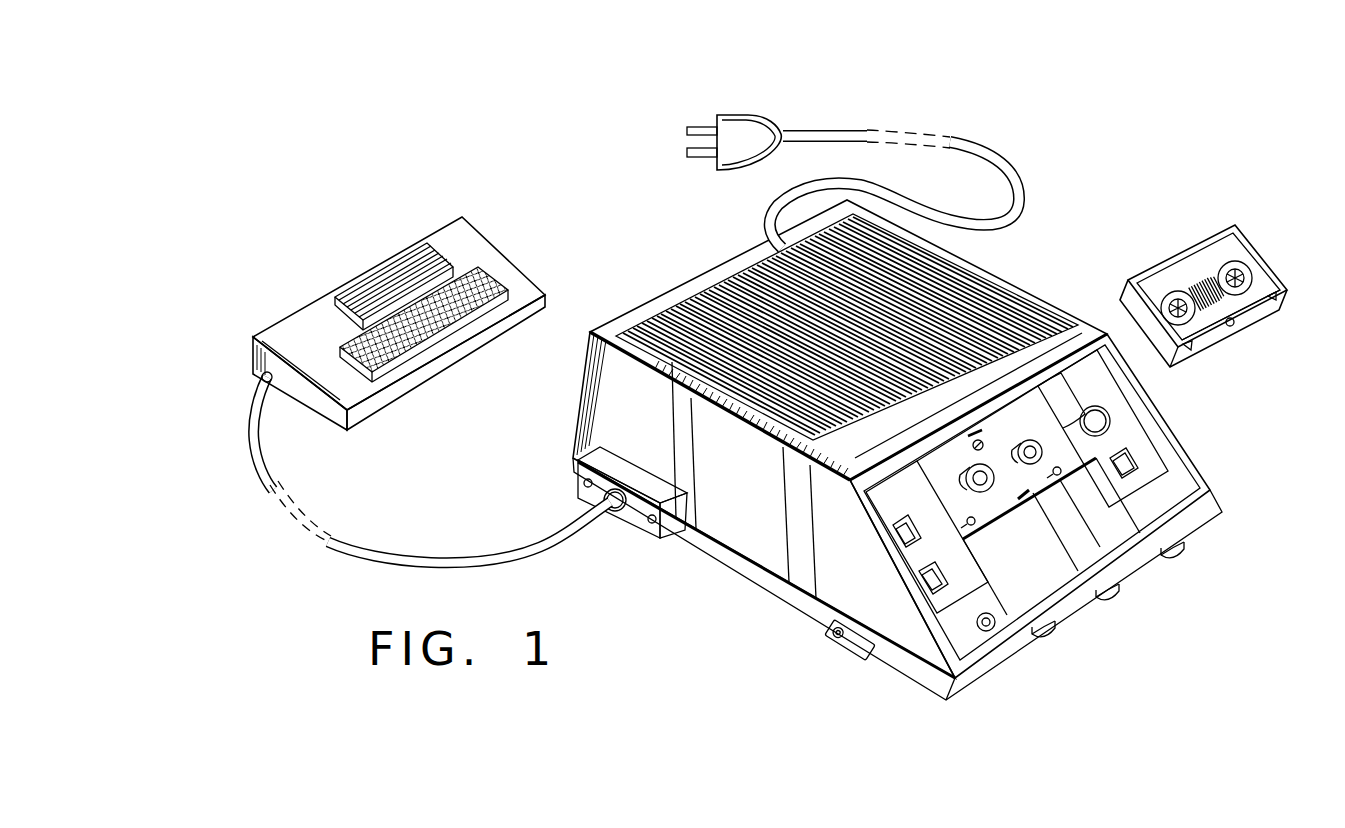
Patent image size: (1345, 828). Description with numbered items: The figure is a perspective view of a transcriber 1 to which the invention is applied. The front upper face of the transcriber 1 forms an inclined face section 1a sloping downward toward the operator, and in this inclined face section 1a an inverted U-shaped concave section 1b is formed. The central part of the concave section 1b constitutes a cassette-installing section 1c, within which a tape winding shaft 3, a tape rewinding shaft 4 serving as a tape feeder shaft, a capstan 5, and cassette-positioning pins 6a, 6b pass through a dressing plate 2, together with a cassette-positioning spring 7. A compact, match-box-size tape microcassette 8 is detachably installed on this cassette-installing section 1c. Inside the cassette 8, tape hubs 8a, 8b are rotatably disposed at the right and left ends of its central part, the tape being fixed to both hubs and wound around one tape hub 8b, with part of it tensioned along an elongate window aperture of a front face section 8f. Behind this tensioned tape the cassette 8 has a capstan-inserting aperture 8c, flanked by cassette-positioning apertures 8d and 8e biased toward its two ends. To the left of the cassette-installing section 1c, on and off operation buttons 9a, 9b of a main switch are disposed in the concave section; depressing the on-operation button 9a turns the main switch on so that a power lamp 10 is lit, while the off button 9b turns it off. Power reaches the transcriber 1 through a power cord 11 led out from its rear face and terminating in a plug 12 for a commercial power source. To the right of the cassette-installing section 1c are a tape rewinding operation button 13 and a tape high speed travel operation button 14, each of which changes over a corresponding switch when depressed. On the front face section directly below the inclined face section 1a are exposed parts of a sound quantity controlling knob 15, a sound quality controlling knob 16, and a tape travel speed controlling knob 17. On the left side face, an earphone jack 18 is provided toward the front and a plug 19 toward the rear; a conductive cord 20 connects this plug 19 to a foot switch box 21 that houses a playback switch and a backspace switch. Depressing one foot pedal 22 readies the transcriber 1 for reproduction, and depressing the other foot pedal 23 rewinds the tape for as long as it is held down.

The transcriber 1 is at (1006, 286).
The inclined face section 1a is at (1213, 492).
The concave section 1b is at (1092, 358).
The cassette-installing section 1c is at (998, 505).
The dressing plate 2 is at (1040, 490).
The tape winding shaft 3 is at (968, 480).
The tape rewinding shaft 4 is at (1023, 463).
The capstan 5 is at (1037, 508).
The cassette-positioning pin 6a is at (975, 524).
The cassette-positioning pin 6b is at (1065, 476).
The cassette-positioning spring 7 is at (984, 435).
The tape microcassette 8 is at (1227, 301).
The tape hub 8a is at (1178, 298).
The tape hub 8b is at (1243, 266).
The capstan-inserting aperture 8c is at (1236, 323).
The cassette-positioning aperture 8d is at (1192, 349).
The cassette-positioning aperture 8e is at (1279, 297).
The front face section 8f is at (1232, 340).
The on operation button 9a is at (897, 532).
The off operation button 9b is at (922, 582).
The power lamp 10 is at (988, 632).
The power cord 11 is at (1020, 167).
The plug 12 is at (765, 122).
The tape rewinding operation button 13 is at (1112, 418).
The tape high speed travel operation button 14 is at (1140, 460).
The sound quantity controlling knob 15 is at (1050, 636).
The sound quality controlling knob 16 is at (1118, 596).
The tape travel speed controlling knob 17 is at (1182, 553).
The earphone jack 18 is at (830, 643).
The plug 19 is at (633, 523).
The conductive cord 20 is at (410, 561).
The foot switch box 21 is at (399, 323).
The foot pedal 22 is at (478, 330).
The foot pedal 23 is at (388, 278).